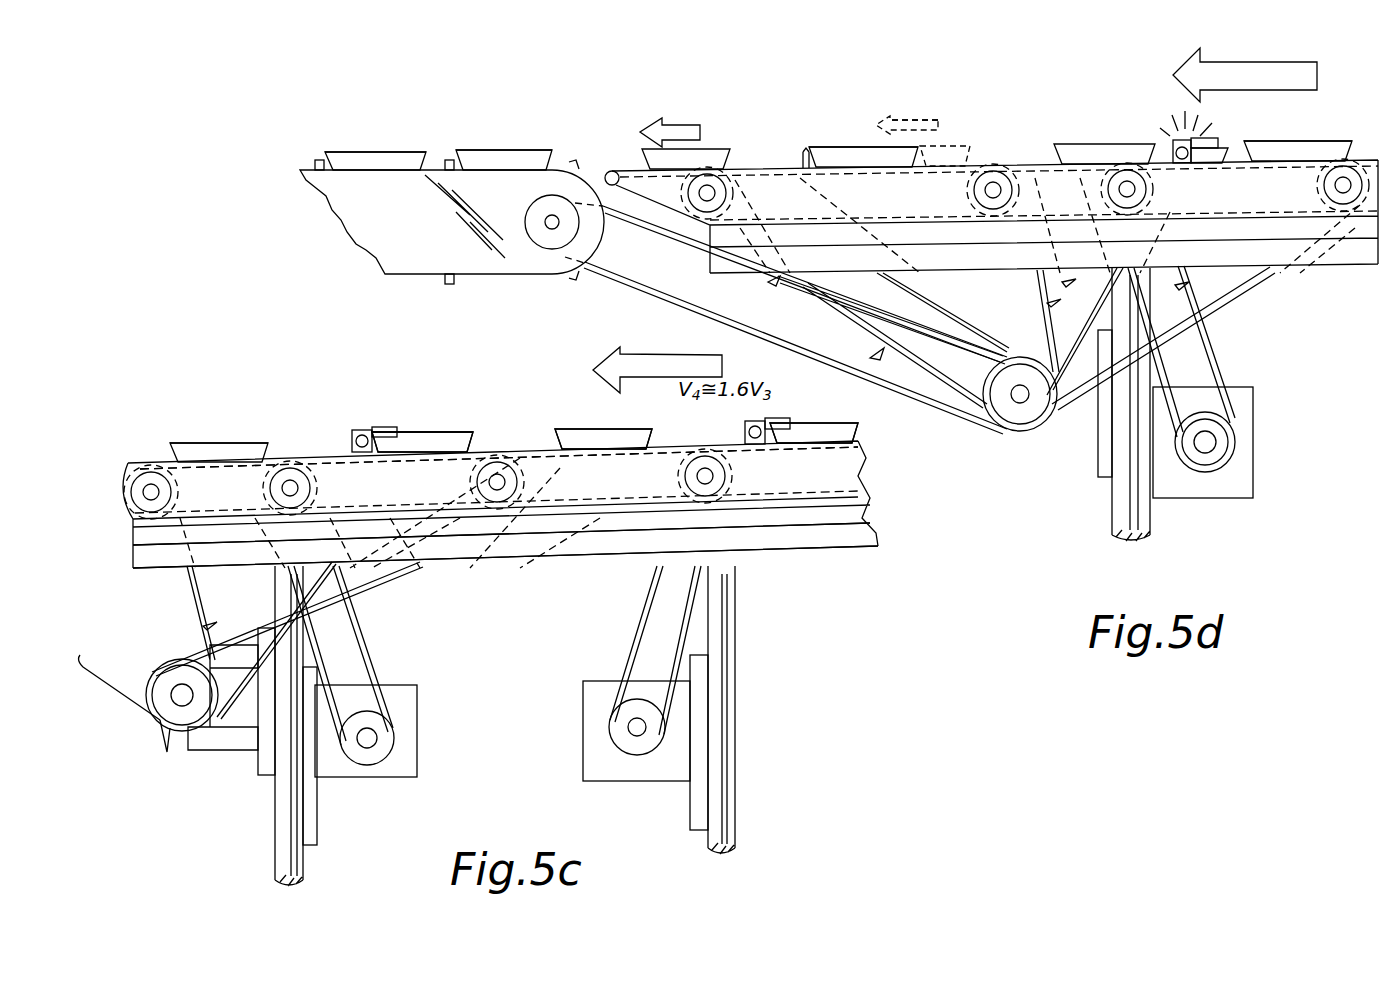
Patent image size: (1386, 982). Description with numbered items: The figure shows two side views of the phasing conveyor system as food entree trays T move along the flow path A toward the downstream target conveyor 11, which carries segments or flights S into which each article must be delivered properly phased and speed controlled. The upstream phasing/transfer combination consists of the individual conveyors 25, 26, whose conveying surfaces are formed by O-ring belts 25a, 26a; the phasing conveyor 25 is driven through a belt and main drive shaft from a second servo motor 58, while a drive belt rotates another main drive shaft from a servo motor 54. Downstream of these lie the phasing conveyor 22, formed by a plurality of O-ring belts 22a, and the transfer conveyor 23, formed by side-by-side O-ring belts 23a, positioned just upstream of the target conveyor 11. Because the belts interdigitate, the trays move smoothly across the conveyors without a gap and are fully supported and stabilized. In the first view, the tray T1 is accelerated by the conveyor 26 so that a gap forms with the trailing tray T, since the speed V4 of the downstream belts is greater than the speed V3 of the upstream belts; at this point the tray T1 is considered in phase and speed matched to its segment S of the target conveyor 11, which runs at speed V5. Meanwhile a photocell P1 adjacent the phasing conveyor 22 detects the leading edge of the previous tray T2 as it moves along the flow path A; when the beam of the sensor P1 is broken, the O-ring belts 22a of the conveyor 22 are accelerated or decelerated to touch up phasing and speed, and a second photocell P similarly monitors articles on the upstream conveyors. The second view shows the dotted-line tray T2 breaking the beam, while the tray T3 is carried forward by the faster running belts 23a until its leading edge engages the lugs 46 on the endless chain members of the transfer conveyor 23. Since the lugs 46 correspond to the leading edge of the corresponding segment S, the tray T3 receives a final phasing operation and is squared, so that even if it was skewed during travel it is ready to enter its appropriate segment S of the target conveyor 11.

In FIG. 5D, the target conveyor 11 is at (470, 270).
In FIG. 5D, the phasing conveyor 22 is at (1280, 278).
In FIG. 5C, the phasing conveyor 22 is at (335, 443).
In FIG. 5D, the O-ring belts 22a is at (1193, 167).
In FIG. 5C, the O-ring belts 22a is at (370, 466).
In FIG. 5D, the transfer conveyor 23 is at (991, 168).
In FIG. 5C, the transfer conveyor 23 is at (500, 467).
In FIG. 5D, the O-ring belts 23a is at (855, 174).
In FIG. 5C, the O-ring belts 23a is at (197, 468).
In FIG. 5C, the phasing conveyor 25 is at (822, 478).
In FIG. 5C, the O-ring belts 25a is at (758, 490).
In FIG. 5C, the transfer conveyor 26 is at (572, 526).
In FIG. 5C, the O-ring belts 26a is at (530, 480).
In FIG. 5D, the lugs 46 is at (805, 162).
In FIG. 5C, the servo motor 54 is at (366, 780).
In FIG. 5C, the second servo motor 58 is at (598, 770).
In FIG. 5D, the flow path A is at (1253, 72).
In FIG. 5C, the flow path A is at (658, 355).
In FIG. 5D, the segment or flight S is at (537, 128).
In FIG. 5D, the tray T is at (490, 160).
In FIG. 5C, the tray T is at (812, 443).
In FIG. 5C, the tray T1 is at (596, 440).
In FIG. 5D, the tray T2 is at (1222, 152).
In FIG. 5C, the tray T2 is at (421, 450).
In FIG. 5D, the tray T3 is at (840, 157).
In FIG. 5C, the package P is at (760, 424).
In FIG. 5D, the photocell P1 is at (1173, 148).
In FIG. 5C, the photocell P1 is at (366, 430).
In FIG. 5D, the conveyor velocity V3 is at (1300, 113).
In FIG. 5C, the conveyor velocity V3 is at (626, 385).
In FIG. 5D, the conveyor velocity V4 is at (914, 102).
In FIG. 5C, the conveyor velocity V4 is at (411, 414).
In FIG. 5D, the conveyor velocity V5 is at (375, 128).